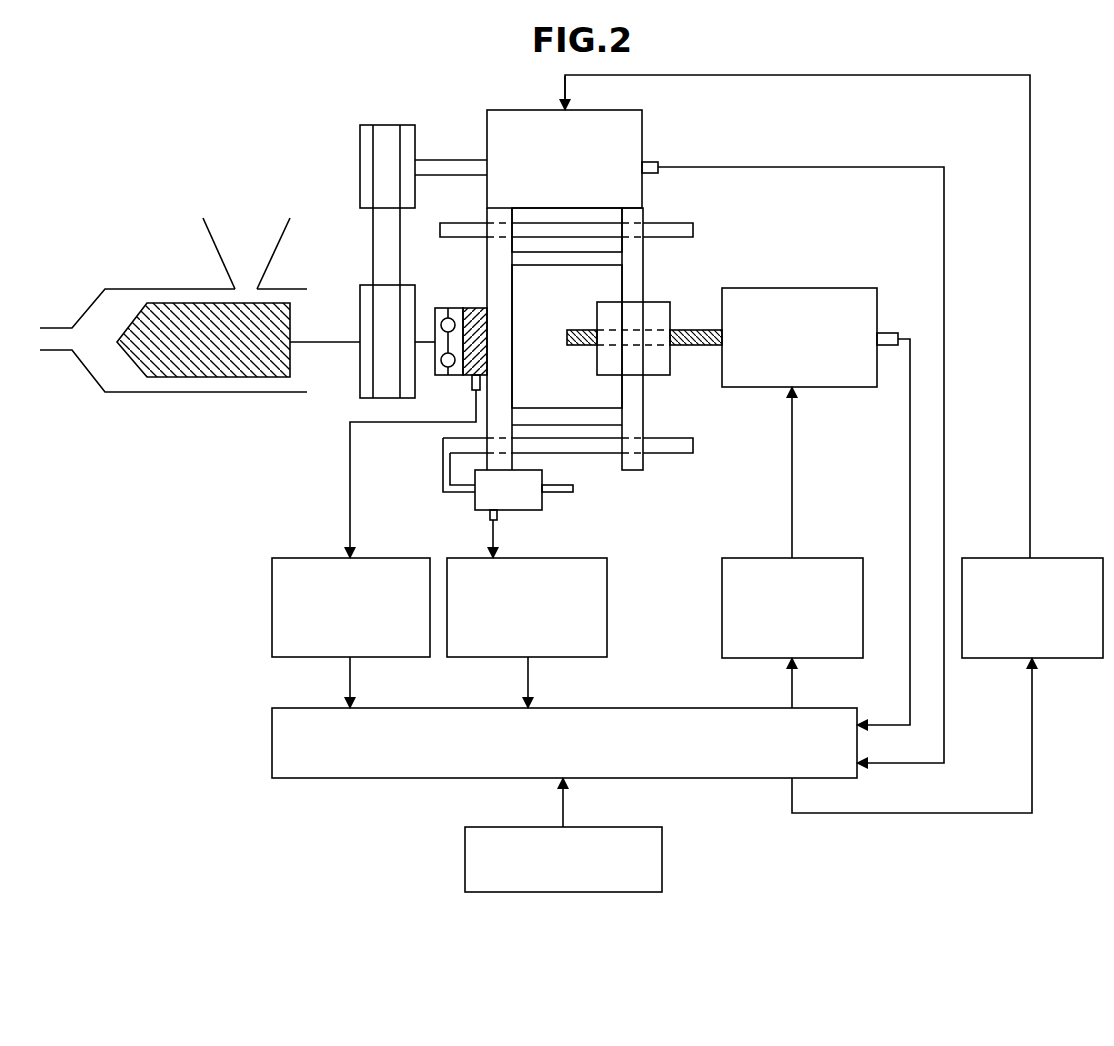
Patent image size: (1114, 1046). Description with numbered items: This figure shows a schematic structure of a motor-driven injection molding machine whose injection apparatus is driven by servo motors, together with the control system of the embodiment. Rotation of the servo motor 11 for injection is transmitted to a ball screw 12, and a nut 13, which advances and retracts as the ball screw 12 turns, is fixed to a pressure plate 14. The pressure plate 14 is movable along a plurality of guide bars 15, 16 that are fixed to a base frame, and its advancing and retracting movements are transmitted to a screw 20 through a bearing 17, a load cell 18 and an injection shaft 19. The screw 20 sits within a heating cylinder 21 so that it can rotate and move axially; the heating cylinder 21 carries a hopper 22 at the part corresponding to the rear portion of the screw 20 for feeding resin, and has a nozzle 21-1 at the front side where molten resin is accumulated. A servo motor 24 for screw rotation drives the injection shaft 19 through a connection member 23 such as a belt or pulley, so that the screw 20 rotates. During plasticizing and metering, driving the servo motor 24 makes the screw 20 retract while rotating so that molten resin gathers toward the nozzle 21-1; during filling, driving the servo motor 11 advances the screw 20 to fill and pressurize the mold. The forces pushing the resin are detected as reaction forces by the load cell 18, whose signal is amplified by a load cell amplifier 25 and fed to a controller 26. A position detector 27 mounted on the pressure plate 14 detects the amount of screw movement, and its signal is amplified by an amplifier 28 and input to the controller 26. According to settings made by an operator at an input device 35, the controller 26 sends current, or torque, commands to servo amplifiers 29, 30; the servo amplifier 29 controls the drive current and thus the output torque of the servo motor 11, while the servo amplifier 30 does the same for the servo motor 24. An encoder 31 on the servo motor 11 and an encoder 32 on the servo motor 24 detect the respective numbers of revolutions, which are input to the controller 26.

The servo motor for injection 11 is at (820, 288).
The ball screw 12 is at (692, 330).
The nut 13 is at (657, 302).
The pressure plate 14 is at (640, 410).
The guide bar 15 is at (693, 225).
The guide bar 16 is at (693, 440).
The bearing 17 is at (442, 308).
The load cell 18 is at (465, 308).
The injection shaft 19 is at (327, 343).
The screw 20 is at (132, 318).
The heating cylinder 21 is at (88, 307).
The nozzle 21-1 is at (87, 373).
The hopper 22 is at (220, 257).
The connection member 23 is at (372, 243).
The servo motor for screw rotation 24 is at (647, 120).
The load cell amplifier 25 is at (272, 610).
The controller 26 is at (398, 778).
The position detector 27 is at (560, 497).
The amplifier 28 is at (610, 583).
The servo amplifier 29 is at (722, 622).
The servo amplifier 30 is at (1078, 662).
The encoder 31 is at (888, 332).
The encoder 32 is at (650, 177).
The input device 35 is at (662, 860).